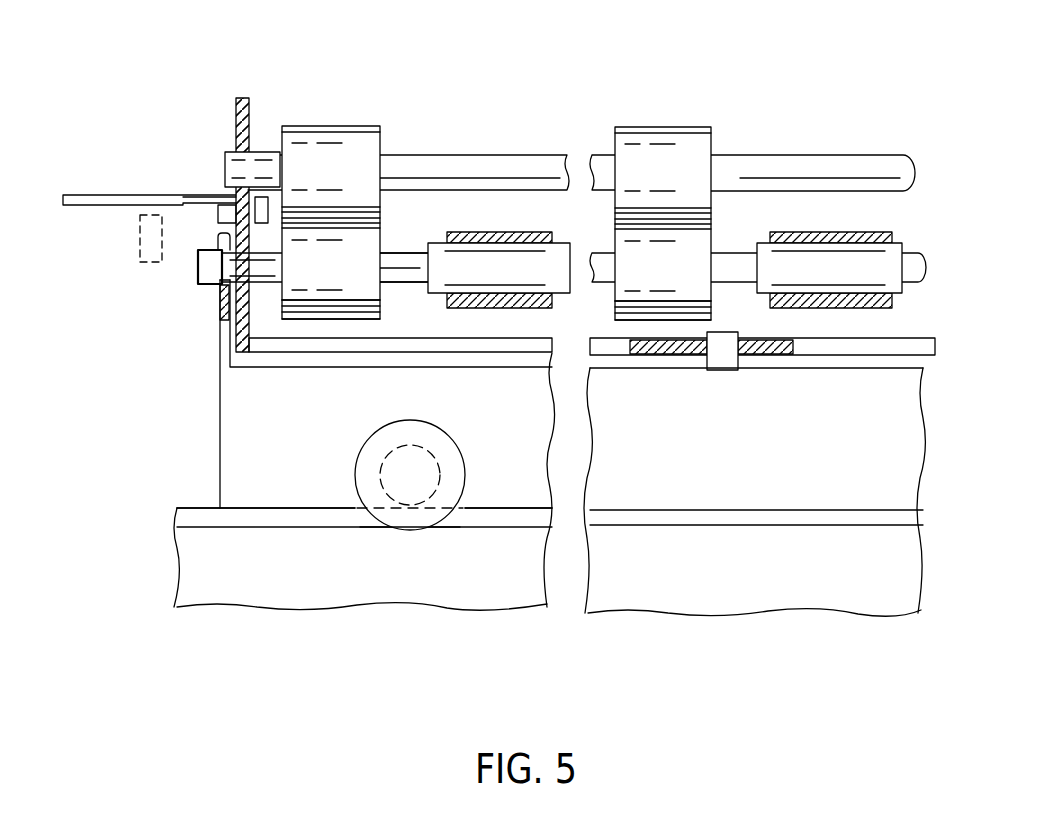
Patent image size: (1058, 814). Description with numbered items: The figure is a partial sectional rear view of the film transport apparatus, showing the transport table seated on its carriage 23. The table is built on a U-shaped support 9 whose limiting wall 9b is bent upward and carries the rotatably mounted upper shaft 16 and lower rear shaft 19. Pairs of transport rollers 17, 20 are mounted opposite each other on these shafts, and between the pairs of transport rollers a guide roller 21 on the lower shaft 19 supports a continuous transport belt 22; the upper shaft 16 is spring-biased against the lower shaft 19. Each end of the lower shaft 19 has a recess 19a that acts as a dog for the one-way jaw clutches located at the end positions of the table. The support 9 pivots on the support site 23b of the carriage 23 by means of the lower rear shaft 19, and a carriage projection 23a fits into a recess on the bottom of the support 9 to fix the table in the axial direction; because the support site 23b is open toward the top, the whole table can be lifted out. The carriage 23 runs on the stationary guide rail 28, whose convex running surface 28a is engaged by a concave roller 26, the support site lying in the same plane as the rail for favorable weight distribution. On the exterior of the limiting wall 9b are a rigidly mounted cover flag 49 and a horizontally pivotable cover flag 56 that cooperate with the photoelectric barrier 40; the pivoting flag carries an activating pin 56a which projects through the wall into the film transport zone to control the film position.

The U-shaped support 9 is at (880, 345).
The limiting wall 9b is at (242, 98).
The upper shaft 16 is at (228, 150).
The transport roller 17 is at (322, 126).
The lower rear shaft 19 is at (400, 285).
The recess 19a is at (205, 258).
The transport roller 20 is at (330, 319).
The guide roller 21 is at (487, 232).
The continuous transport belt 22 is at (437, 245).
The carriage 23 is at (828, 483).
The carriage projection 23a is at (723, 350).
The support site 23b is at (218, 302).
The roller 26 is at (465, 455).
The guide rail 28 is at (245, 592).
The running surface 28a is at (297, 508).
The photoelectric barrier 40 is at (140, 242).
The cover flag 49 is at (90, 195).
The cover flag 56 is at (197, 195).
The activating pin 56a is at (257, 197).